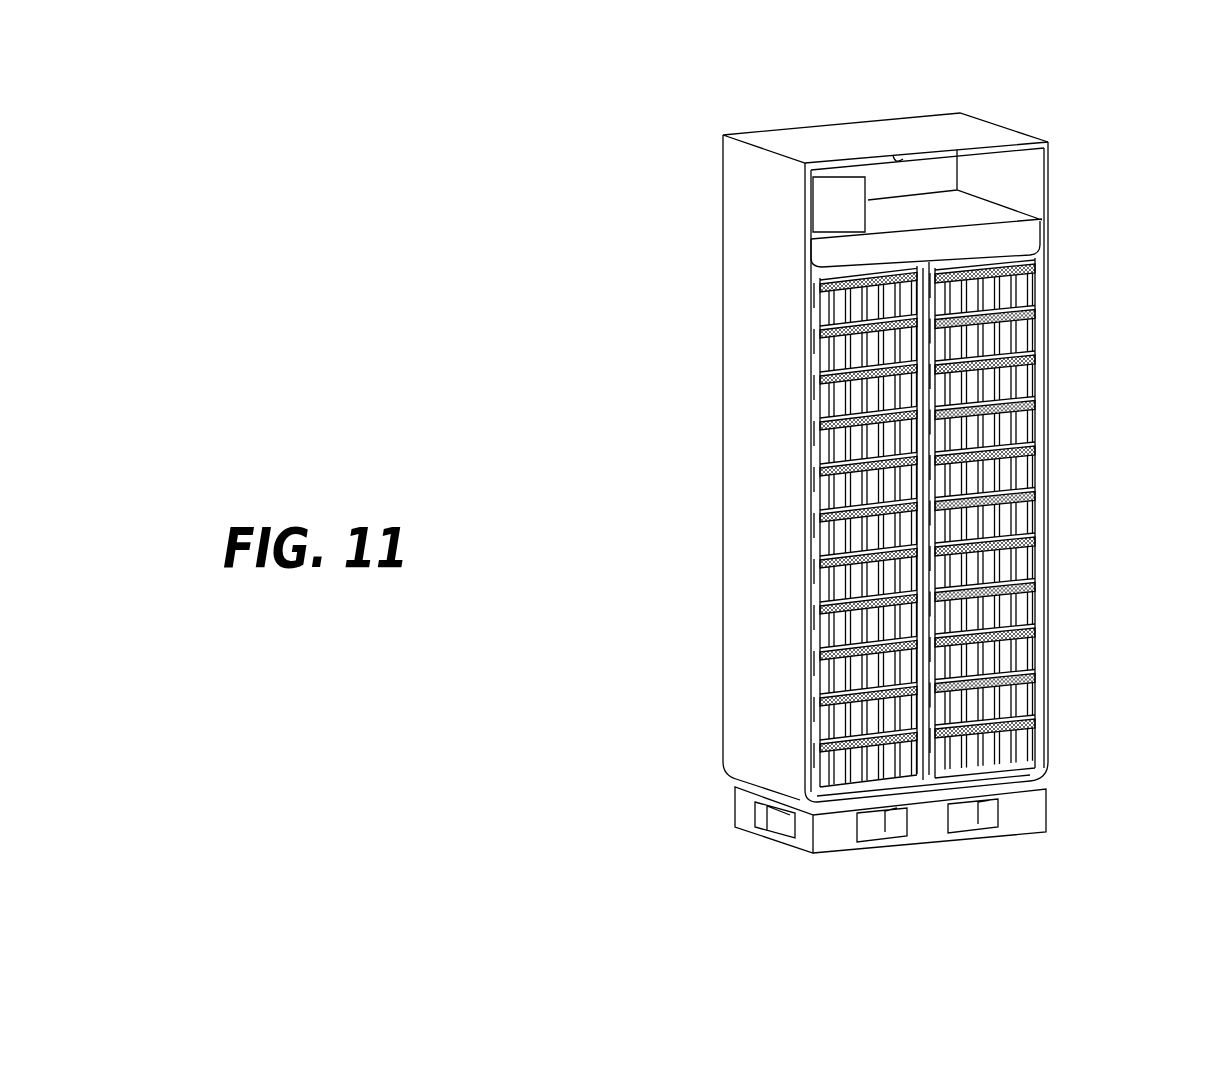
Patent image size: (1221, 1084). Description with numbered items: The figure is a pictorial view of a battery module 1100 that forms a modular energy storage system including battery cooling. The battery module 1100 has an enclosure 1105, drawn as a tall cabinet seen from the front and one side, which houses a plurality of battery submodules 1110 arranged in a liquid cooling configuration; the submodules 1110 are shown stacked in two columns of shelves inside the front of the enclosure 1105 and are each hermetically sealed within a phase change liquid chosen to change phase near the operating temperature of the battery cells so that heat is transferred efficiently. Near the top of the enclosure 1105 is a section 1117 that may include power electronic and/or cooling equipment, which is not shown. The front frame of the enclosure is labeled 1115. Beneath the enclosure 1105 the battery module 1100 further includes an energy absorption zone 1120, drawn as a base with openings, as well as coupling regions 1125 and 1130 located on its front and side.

The battery module 1100 is at (307, 68).
The enclosure 1105 is at (717, 135).
The battery submodules 1110 is at (983, 292).
The front frame 1115 is at (1058, 178).
The section 1117 is at (842, 200).
The energy absorption zone 1120 is at (807, 867).
The coupling region 1125 is at (977, 830).
The coupling region 1130 is at (777, 828).